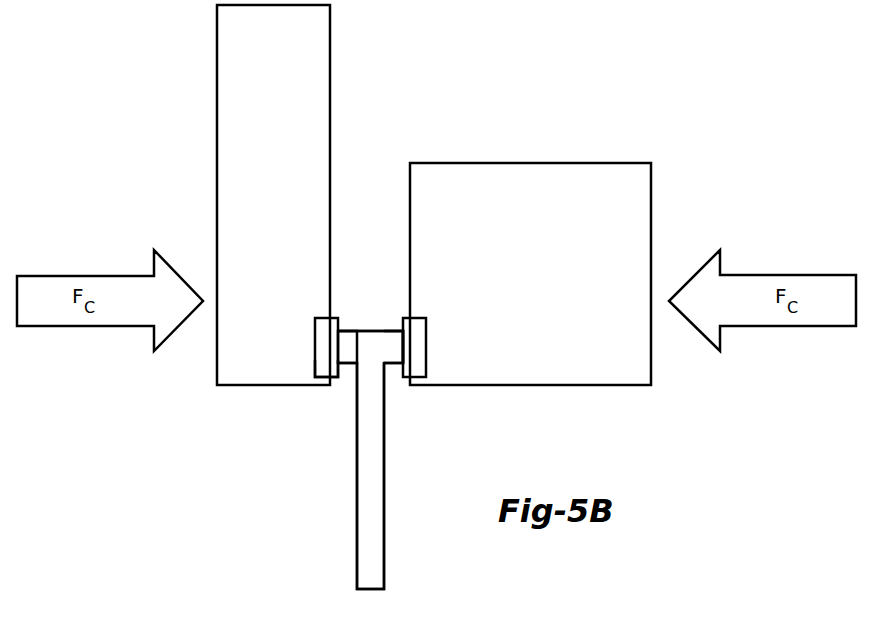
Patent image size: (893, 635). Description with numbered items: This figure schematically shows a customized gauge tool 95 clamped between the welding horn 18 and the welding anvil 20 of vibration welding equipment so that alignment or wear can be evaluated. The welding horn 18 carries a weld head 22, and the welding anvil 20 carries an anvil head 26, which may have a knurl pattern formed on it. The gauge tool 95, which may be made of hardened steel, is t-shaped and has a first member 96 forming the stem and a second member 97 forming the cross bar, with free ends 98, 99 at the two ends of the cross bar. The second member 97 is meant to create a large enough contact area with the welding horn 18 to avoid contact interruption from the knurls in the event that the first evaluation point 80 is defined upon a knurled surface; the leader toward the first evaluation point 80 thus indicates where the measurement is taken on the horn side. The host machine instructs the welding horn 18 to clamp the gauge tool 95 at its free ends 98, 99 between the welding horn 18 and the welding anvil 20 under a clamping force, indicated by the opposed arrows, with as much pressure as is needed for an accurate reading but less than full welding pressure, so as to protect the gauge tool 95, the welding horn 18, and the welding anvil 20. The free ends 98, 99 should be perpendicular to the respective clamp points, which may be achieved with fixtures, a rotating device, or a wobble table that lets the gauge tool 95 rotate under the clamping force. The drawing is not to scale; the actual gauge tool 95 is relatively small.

The welding horn 18 is at (287, 197).
The welding anvil 20 is at (519, 270).
The weld head 22 is at (322, 372).
The anvil head 26 is at (417, 372).
The first evaluation point 80 is at (330, 355).
The customized gauge tool 95 is at (345, 549).
The first member 96 is at (372, 570).
The second member 97 is at (377, 338).
The free end 98 is at (343, 323).
The free end 99 is at (400, 323).